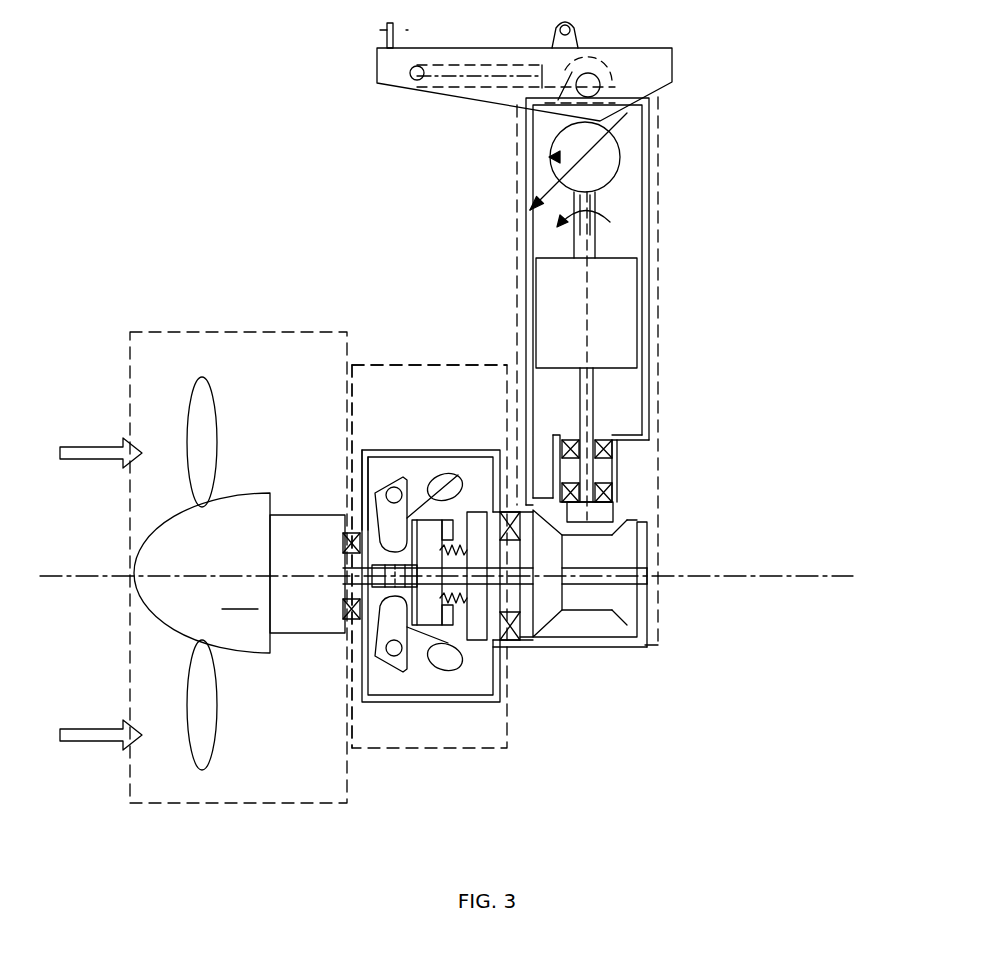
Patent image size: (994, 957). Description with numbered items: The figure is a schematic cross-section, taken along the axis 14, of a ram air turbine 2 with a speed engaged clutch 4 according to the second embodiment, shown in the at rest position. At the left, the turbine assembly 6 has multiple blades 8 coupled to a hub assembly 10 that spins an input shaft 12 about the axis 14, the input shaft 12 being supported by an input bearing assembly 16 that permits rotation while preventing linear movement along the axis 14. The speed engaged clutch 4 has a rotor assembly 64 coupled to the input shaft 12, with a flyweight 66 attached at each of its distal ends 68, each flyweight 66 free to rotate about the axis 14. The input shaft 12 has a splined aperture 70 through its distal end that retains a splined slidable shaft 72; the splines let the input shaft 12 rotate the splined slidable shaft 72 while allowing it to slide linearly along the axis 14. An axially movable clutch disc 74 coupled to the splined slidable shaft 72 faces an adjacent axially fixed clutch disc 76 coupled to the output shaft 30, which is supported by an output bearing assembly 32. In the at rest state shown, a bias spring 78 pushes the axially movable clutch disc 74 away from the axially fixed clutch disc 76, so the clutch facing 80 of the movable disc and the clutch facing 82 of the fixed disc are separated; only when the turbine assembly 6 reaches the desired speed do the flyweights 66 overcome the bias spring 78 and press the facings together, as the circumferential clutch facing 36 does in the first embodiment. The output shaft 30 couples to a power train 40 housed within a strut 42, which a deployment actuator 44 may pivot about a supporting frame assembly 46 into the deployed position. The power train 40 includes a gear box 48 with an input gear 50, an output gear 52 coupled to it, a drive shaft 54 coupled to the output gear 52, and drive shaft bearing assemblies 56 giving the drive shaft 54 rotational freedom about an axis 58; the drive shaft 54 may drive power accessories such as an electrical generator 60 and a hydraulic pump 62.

The ram air turbine 2 is at (152, 69).
The speed engaged clutch 4 is at (411, 363).
The turbine assembly 6 is at (230, 327).
The blades 8 is at (198, 377).
The hub assembly 10 is at (305, 513).
The input shaft 12 is at (345, 622).
The axis 14 is at (730, 577).
The input bearing assembly 16 is at (350, 510).
The output shaft 30 is at (511, 576).
The output bearing assembly 32 is at (540, 645).
The circumferential clutch facing 36 is at (429, 329).
The power train 40 is at (597, 233).
The strut 42 is at (528, 258).
The deployment actuator 44 is at (488, 88).
The frame assembly 46 is at (673, 65).
The gear box 48 is at (638, 622).
The input gear 50 is at (548, 645).
The output gear 52 is at (605, 520).
The drive shaft 54 is at (596, 468).
The drive shaft bearing assemblies 56 is at (612, 440).
The axis 58 is at (587, 332).
The electrical generator 60 is at (610, 313).
The hydraulic pump 62 is at (603, 160).
The rotor assembly 64 is at (407, 661).
The flyweight 66 is at (448, 662).
The distal ends 68 is at (395, 652).
The splined aperture 70 is at (385, 600).
The splined slidable shaft 72 is at (395, 576).
The axially movable clutch disc 74 is at (427, 625).
The axially fixed clutch disc 76 is at (467, 613).
The bias spring 78 is at (465, 540).
The clutch facing 80 is at (510, 642).
The clutch facing 82 is at (522, 642).